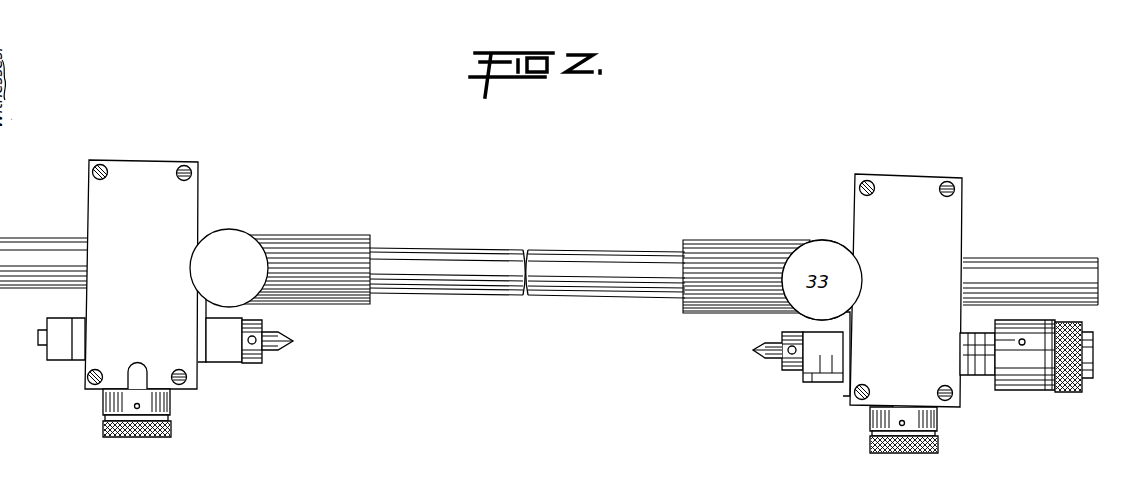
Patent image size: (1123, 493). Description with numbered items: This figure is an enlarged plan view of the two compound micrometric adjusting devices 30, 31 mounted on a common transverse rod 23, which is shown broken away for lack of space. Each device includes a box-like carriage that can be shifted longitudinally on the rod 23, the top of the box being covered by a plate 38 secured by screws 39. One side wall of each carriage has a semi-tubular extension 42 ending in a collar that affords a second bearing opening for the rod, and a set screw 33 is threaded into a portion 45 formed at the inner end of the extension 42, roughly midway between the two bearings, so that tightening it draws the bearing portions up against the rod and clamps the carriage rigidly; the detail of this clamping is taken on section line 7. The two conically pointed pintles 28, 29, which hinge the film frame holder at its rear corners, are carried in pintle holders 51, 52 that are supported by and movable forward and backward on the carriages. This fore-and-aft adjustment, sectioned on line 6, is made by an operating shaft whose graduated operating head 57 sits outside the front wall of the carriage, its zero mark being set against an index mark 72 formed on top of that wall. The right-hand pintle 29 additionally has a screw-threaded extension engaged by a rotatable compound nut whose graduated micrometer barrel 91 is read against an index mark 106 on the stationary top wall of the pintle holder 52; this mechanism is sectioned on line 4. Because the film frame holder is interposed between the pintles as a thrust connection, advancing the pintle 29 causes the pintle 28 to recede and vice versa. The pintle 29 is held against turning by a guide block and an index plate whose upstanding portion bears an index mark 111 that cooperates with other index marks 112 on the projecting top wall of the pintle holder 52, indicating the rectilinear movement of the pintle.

The transverse rod 23 is at (490, 256).
The semi-tubular extension 42 is at (340, 240).
The plate 38 is at (505, 343).
The micrometric device 30 is at (141, 274).
The screws 39 is at (110, 368).
The set screws 33 is at (526, 274).
The section line 7- 7 is at (234, 213).
The pintle holder 51 is at (227, 355).
The pintle 28 is at (273, 348).
The graduated operating head 57 is at (127, 393).
The micrometric device 31 is at (906, 290).
The carriage portion 45 is at (802, 242).
The section line 6- 6 is at (908, 490).
The pintle holder 52 is at (813, 332).
The index marks 112 is at (803, 368).
The index mark 111 is at (813, 383).
The pintle 29 is at (763, 357).
The section line 4- 4 is at (753, 350).
The index mark 72 is at (903, 397).
The index mark 106 is at (983, 353).
The micrometer barrel 91 is at (1035, 393).